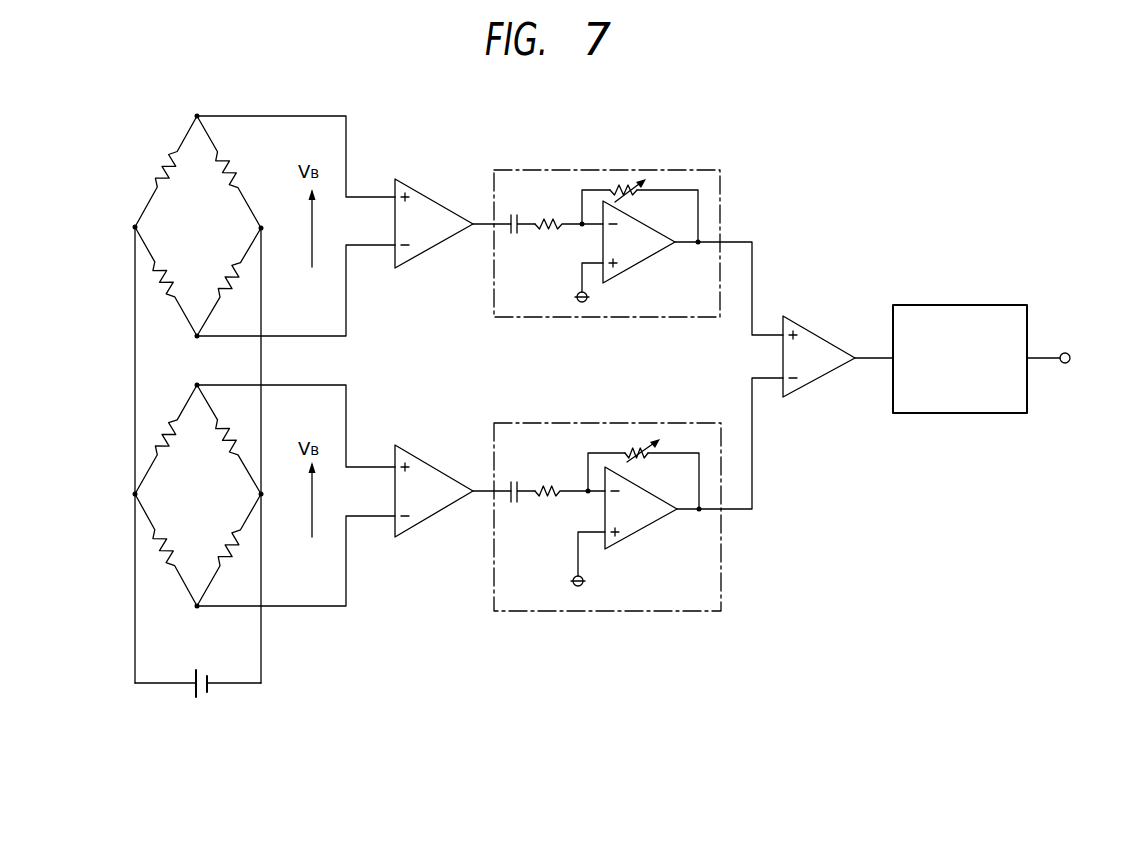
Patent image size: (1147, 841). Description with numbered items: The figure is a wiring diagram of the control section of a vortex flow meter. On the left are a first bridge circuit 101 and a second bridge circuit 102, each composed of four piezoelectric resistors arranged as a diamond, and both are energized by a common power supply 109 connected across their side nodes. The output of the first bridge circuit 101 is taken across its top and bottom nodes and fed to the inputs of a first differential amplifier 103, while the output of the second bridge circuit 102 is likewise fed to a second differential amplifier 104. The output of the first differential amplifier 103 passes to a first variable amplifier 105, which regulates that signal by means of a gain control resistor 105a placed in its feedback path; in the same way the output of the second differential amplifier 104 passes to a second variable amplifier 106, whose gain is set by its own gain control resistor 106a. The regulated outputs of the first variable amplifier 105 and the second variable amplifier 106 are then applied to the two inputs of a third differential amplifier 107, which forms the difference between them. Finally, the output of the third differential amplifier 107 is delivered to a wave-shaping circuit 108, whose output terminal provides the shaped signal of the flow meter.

The first bridge circuit 101 is at (215, 240).
The second bridge circuit 102 is at (215, 508).
The first differential amplifier 103 is at (434, 199).
The second differential amplifier 104 is at (440, 512).
The first variable amplifier 105 is at (607, 217).
The gain control resistor 105a is at (624, 185).
The second variable amplifier 106 is at (607, 495).
The gain control resistor 106a is at (636, 446).
The third differential amplifier 107 is at (818, 335).
The wave-shaping circuit 108 is at (952, 305).
The power supply 109 is at (201, 698).